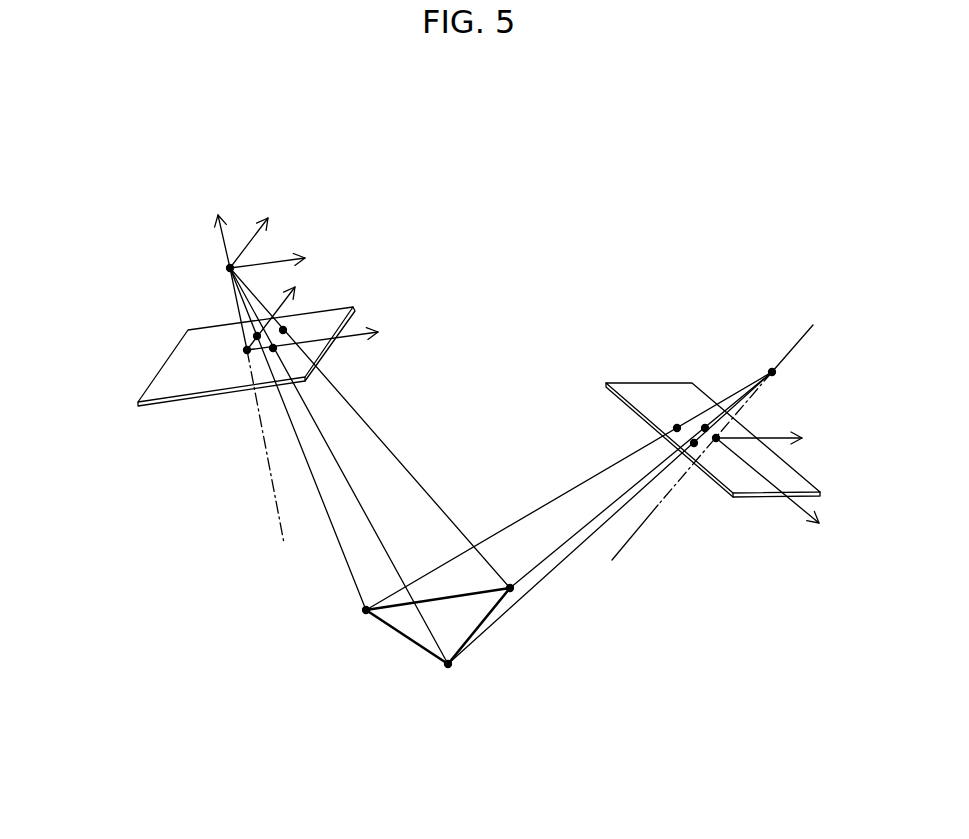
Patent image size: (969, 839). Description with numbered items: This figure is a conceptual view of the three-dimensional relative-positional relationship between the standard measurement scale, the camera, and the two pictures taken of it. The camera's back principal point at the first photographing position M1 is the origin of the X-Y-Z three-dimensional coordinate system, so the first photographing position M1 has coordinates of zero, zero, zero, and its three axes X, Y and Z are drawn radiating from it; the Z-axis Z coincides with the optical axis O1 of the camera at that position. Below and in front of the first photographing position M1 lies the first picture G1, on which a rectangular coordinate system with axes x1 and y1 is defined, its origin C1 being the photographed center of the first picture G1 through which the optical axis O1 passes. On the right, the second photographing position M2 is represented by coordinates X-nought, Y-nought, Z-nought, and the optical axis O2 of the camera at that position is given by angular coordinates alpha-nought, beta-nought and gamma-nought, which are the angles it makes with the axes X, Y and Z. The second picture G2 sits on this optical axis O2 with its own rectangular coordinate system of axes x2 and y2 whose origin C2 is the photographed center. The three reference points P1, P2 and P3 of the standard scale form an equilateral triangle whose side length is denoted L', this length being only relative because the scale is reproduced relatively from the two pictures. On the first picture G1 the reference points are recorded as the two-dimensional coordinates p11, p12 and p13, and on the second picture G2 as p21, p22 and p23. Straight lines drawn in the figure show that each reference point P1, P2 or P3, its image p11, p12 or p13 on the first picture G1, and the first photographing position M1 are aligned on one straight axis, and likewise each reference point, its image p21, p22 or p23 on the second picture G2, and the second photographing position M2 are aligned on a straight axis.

The first photographing position M1 is at (227, 268).
The second photographing position M2 is at (772, 372).
The X-axis X is at (279, 256).
The Y-axis Y is at (257, 231).
The Z-axis Z is at (221, 226).
The first picture G1 is at (182, 362).
The second picture G2 is at (777, 468).
The origin of the x1-y1 coordinate system C1 is at (232, 353).
The origin of the x2-y2 coordinate system C2 is at (722, 456).
The x1-axis x1 is at (328, 332).
The y1-axis y1 is at (286, 307).
The x2-axis x2 is at (784, 493).
The y2-axis y2 is at (776, 440).
The optical axis O1 is at (262, 447).
The optical axis O2 is at (640, 528).
The two-dimensional coordinates of reference point P1 on the first picture p11 is at (283, 330).
The two-dimensional coordinates of reference point P2 on the first picture p12 is at (273, 348).
The two-dimensional coordinates of reference point P3 on the first picture p13 is at (255, 335).
The two-dimensional coordinates of reference point P1 on the second picture p21 is at (705, 428).
The two-dimensional coordinates of reference point P2 on the second picture p22 is at (694, 443).
The two-dimensional coordinates of reference point P3 on the second picture p23 is at (677, 428).
The reference point P1 is at (510, 588).
The reference point P2 is at (448, 664).
The reference point P3 is at (366, 610).
The length of the sides of the equilateral triangle L' is at (438, 628).